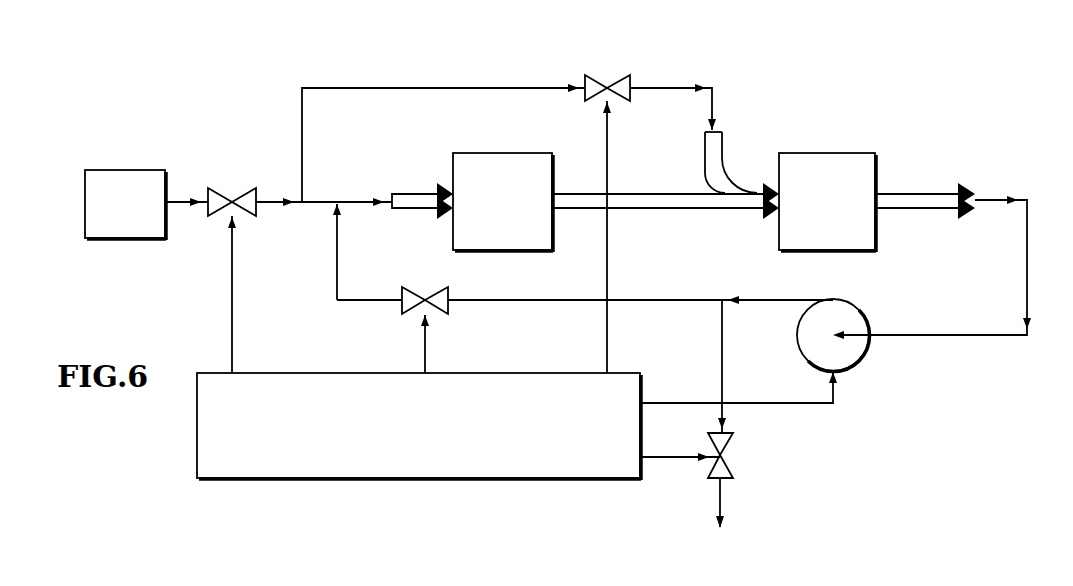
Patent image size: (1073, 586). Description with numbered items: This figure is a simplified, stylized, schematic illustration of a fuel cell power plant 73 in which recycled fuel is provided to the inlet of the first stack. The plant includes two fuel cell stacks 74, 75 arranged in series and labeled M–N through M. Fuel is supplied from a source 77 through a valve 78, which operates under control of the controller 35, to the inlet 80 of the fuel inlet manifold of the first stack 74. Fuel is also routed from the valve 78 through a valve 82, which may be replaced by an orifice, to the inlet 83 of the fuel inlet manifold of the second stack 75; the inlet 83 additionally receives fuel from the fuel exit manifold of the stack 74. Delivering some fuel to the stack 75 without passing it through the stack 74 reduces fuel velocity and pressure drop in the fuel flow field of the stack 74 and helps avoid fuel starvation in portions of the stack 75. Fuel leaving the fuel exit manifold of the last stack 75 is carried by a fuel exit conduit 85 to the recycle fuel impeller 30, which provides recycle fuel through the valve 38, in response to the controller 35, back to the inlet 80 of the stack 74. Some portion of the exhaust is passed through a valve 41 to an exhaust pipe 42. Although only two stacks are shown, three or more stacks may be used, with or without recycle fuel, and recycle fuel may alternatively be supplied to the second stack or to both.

The source 77 is at (150, 170).
The valve 78 is at (233, 197).
The inlet 80 is at (422, 209).
The fuel cell stack 74 is at (500, 153).
The inlet 83 is at (751, 210).
The fuel cell stack 75 is at (830, 153).
The fuel exit conduit 85 is at (905, 209).
The valve 82 is at (613, 80).
The valve 38 is at (428, 292).
The fuel recycle impeller 30 is at (852, 312).
The controller 35 is at (480, 373).
The valve 41 is at (716, 470).
The exhaust pipe 42 is at (722, 500).
The fuel cell power plant 73 is at (982, 107).